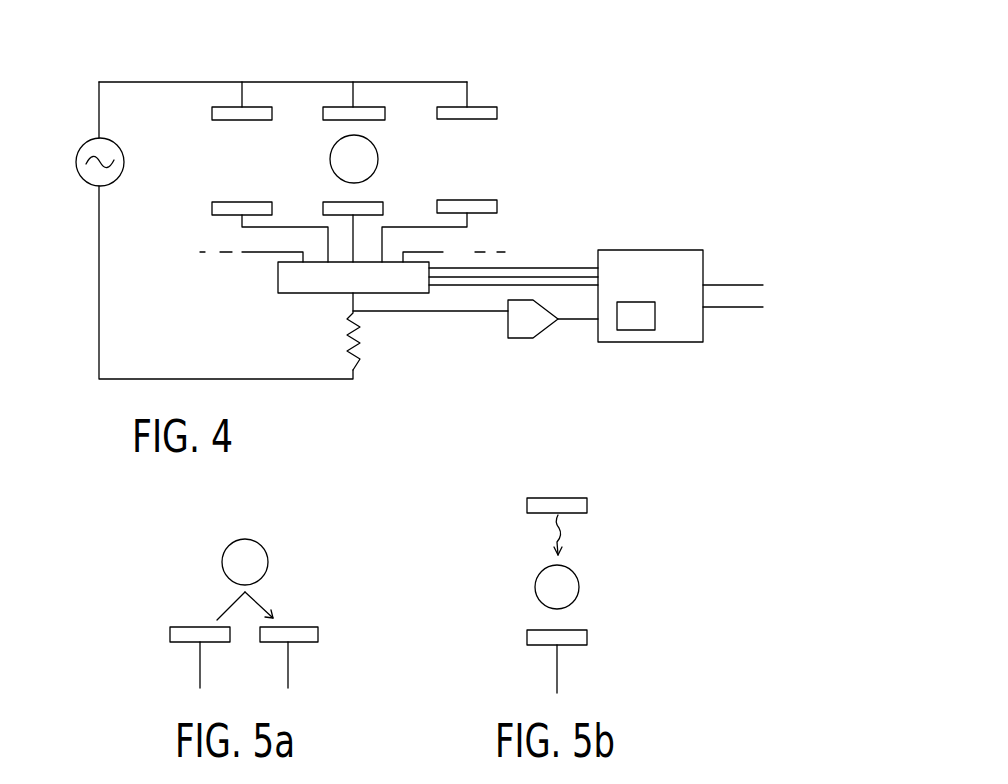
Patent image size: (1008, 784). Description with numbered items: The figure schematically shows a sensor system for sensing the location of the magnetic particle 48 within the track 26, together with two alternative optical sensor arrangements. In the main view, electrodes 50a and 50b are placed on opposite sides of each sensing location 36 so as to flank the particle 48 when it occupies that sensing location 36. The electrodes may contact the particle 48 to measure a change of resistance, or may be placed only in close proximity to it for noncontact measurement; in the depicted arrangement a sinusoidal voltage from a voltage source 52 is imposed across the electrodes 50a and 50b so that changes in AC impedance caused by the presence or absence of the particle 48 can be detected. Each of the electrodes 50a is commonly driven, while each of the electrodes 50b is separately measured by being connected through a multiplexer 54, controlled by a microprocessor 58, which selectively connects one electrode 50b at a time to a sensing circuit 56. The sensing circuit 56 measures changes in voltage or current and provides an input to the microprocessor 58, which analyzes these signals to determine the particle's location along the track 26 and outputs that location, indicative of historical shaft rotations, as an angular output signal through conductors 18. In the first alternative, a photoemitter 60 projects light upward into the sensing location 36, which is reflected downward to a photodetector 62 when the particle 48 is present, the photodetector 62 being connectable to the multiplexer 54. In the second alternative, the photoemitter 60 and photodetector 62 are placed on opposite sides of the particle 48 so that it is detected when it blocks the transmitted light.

In FIG. 4, the conductors 18 is at (730, 308).
In FIG. 4, the track 26 is at (522, 160).
In FIG. 4, the sensing location 36 is at (257, 65).
In FIG. 5a, the sensing location 36 is at (290, 517).
In FIG. 5b, the sensing location 36 is at (635, 497).
In FIG. 4, the magnetic particle 48 is at (378, 160).
In FIG. 5a, the magnetic particle 48 is at (232, 553).
In FIG. 5b, the magnetic particle 48 is at (580, 585).
In FIG. 4, the electrode 50a is at (323, 122).
In FIG. 4, the electrode 50b is at (327, 202).
In FIG. 4, the voltage source 52 is at (84, 178).
In FIG. 4, the multiplexer 54 is at (278, 290).
In FIG. 4, the sensing circuit 56 is at (375, 340).
In FIG. 4, the microprocessor 58 is at (648, 250).
In FIG. 5a, the photoemitter 60 is at (180, 627).
In FIG. 5b, the photoemitter 60 is at (567, 498).
In FIG. 5a, the photodetector 62 is at (308, 627).
In FIG. 5b, the photodetector 62 is at (580, 647).